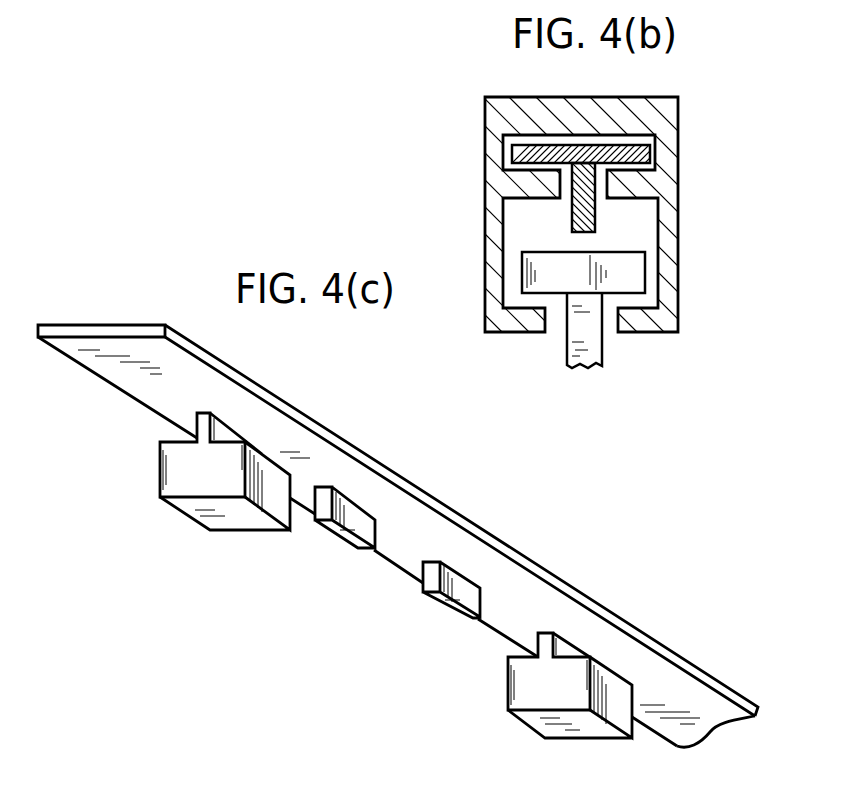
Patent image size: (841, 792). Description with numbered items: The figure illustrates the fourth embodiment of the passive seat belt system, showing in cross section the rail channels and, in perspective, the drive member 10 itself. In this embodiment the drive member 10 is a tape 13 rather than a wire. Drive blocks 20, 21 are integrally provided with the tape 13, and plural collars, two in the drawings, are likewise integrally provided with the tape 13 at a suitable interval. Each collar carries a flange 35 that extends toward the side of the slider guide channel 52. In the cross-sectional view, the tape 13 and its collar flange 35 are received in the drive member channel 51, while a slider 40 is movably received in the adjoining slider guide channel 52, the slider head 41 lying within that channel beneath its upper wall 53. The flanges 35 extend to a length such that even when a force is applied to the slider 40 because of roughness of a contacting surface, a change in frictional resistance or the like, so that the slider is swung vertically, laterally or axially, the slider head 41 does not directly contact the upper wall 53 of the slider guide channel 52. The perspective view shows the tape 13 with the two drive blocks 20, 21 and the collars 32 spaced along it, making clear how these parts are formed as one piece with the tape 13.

The drive member 10 is at (414, 479).
The tape 13 is at (222, 387).
The drive block 20 is at (160, 473).
The drive block 21 is at (508, 678).
The collar 32 is at (447, 603).
The flange 35 is at (595, 212).
The slider 40 is at (600, 343).
The slider head 41 is at (642, 281).
The drive member channel 51 is at (655, 143).
The slider guide channel 52 is at (653, 234).
The upper wall 53 is at (525, 203).